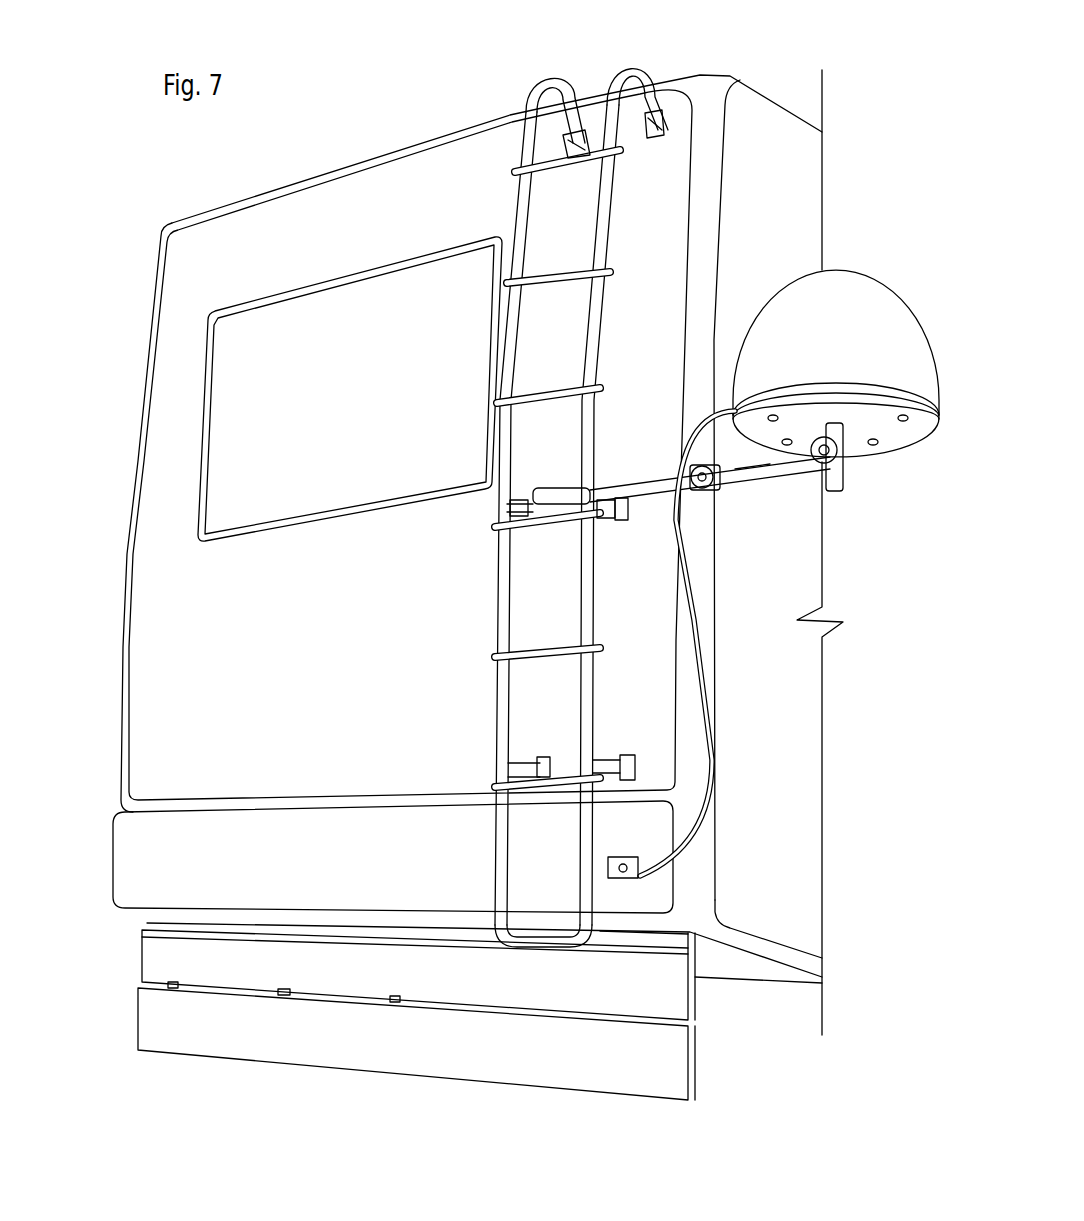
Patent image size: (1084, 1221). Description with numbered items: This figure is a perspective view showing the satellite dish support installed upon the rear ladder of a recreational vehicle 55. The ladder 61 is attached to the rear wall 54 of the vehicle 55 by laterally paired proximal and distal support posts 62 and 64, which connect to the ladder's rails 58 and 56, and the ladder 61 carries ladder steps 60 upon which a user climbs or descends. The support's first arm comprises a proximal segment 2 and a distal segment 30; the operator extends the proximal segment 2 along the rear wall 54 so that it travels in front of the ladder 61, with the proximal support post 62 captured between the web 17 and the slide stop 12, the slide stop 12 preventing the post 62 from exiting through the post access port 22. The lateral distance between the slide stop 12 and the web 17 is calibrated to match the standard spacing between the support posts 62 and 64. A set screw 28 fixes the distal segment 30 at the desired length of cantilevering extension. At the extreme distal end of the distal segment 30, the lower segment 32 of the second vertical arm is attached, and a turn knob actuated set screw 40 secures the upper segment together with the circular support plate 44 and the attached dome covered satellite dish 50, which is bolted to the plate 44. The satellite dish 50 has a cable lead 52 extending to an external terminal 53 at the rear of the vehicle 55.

The proximal segment 2 is at (620, 488).
The slide stop 12 is at (615, 520).
The web 17 is at (523, 510).
The post access port 22 is at (528, 505).
The set screw 28 is at (700, 490).
The distal segment 30 is at (752, 478).
The lower segment 32 is at (840, 478).
The set screw 40 is at (840, 456).
The support plate 44 is at (910, 437).
The satellite dish 50 is at (850, 300).
The cable lead 52 is at (700, 660).
The external terminal 53 is at (615, 880).
The rear wall 54 is at (231, 635).
The recreational vehicle 55 is at (130, 301).
The ladder rail 56 is at (607, 228).
The ladder rail 58 is at (517, 220).
The ladder steps 60 is at (575, 278).
The ladder 61 is at (494, 695).
The proximal support post 62 is at (552, 135).
The distal support post 64 is at (672, 115).